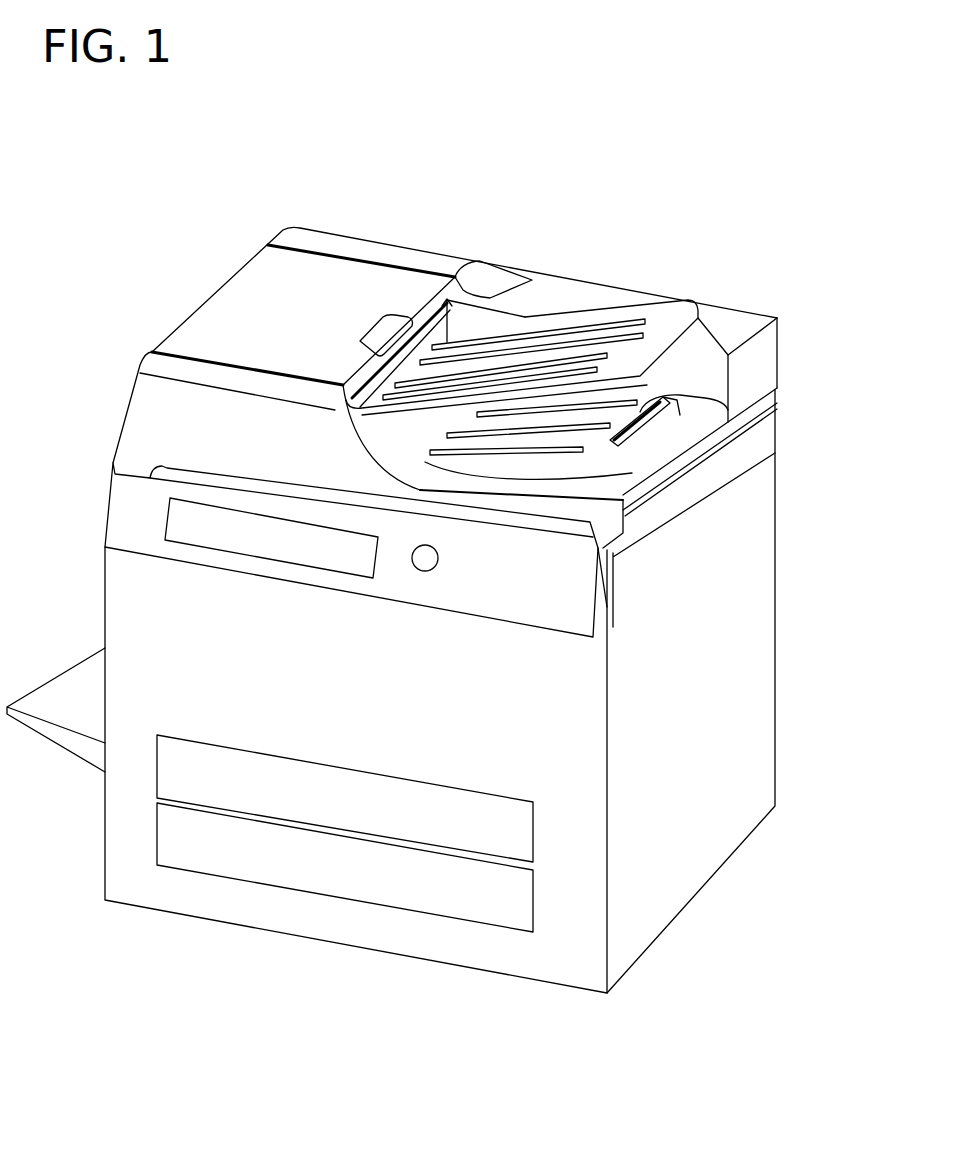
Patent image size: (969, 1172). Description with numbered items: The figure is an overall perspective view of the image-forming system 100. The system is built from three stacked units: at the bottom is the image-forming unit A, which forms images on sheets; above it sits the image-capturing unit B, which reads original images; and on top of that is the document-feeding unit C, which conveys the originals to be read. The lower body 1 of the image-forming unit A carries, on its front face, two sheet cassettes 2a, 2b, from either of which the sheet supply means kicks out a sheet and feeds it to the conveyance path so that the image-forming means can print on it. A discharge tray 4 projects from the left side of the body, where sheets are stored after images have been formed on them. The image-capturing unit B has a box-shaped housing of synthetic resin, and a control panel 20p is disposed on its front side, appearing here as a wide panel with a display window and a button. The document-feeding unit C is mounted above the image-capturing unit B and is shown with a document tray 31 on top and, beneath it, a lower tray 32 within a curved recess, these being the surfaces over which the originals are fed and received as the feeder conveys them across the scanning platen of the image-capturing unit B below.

The image-forming system 100 is at (158, 296).
The apparatus main body 1 is at (740, 713).
The cassette 2a is at (167, 768).
The cassette 2b is at (170, 835).
The discharge tray 4 is at (75, 696).
The control panel 20p is at (238, 538).
The document feed tray 31 is at (660, 323).
The document discharge tray 32 is at (655, 400).
The image-forming unit A is at (747, 627).
The image-capturing unit B is at (762, 434).
The document-feeding unit C is at (560, 283).